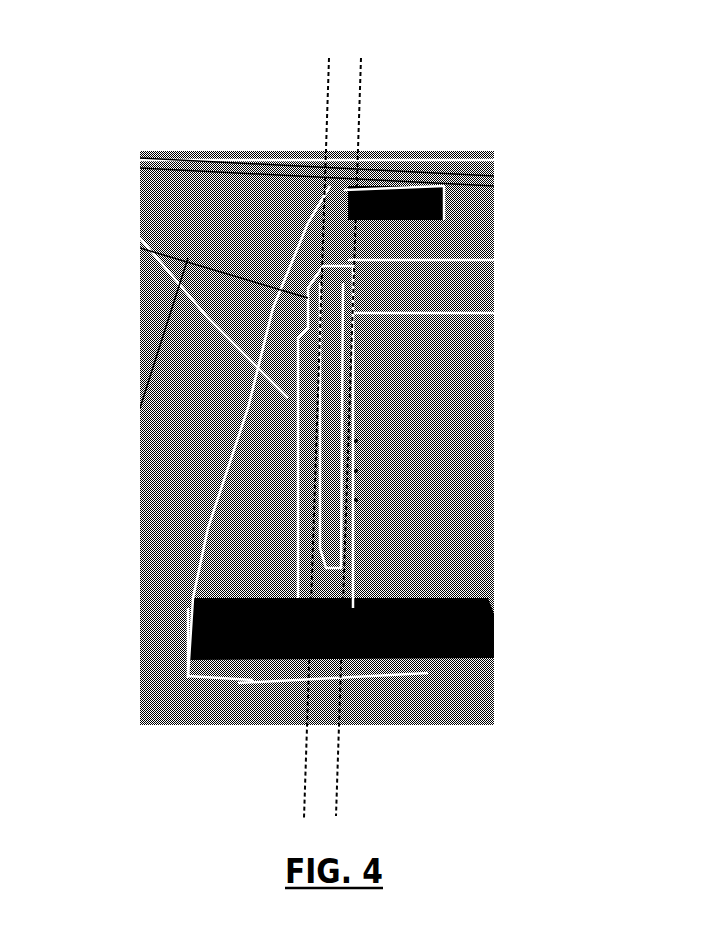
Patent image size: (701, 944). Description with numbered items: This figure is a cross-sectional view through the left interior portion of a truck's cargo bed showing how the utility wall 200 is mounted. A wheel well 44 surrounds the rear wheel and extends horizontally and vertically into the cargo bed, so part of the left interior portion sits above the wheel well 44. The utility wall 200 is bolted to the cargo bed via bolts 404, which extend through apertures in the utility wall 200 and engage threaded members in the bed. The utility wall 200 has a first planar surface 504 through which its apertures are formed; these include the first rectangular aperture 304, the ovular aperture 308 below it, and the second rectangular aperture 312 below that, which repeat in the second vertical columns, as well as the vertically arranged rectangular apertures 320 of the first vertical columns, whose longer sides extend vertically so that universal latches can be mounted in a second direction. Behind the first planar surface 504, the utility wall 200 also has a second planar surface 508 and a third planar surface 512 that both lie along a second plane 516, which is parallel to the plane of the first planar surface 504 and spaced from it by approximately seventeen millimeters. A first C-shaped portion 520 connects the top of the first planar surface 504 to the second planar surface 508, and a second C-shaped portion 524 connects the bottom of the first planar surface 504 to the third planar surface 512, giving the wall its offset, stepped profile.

The utility wall 200 is at (382, 397).
The wheel well 44 is at (440, 568).
The first rectangular aperture 304 is at (348, 433).
The ovular aperture 308 is at (348, 463).
The second rectangular aperture 312 is at (348, 492).
The vertically arranged rectangular apertures 320 is at (340, 577).
The bolts 404 is at (270, 425).
The first planar surface 504 is at (355, 70).
The second planar surface 508 is at (297, 297).
The third planar surface 512 is at (292, 563).
The second plane 516 is at (318, 64).
The first C-shaped portion 520 is at (330, 258).
The second C-shaped portion 524 is at (343, 645).